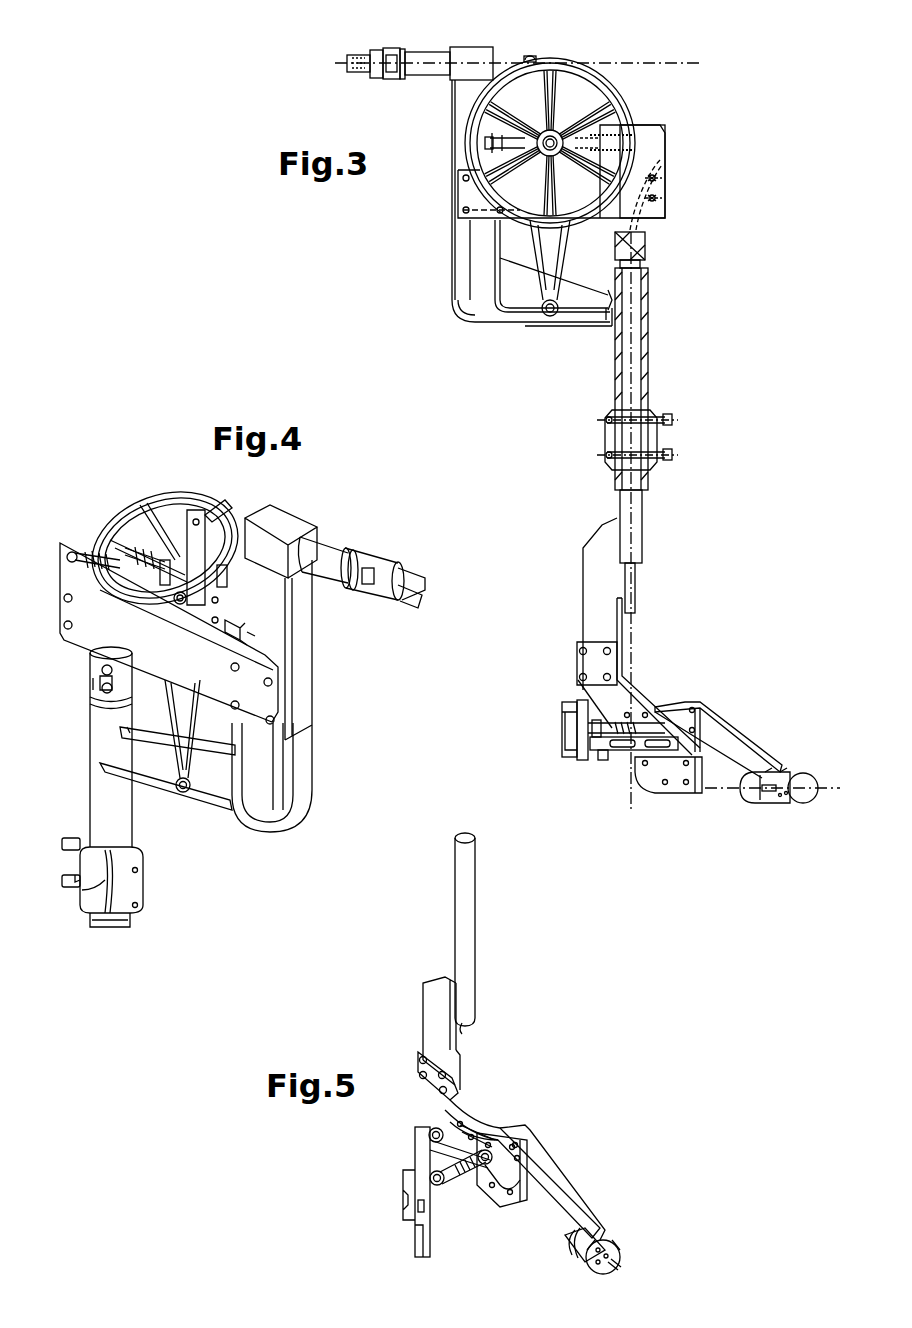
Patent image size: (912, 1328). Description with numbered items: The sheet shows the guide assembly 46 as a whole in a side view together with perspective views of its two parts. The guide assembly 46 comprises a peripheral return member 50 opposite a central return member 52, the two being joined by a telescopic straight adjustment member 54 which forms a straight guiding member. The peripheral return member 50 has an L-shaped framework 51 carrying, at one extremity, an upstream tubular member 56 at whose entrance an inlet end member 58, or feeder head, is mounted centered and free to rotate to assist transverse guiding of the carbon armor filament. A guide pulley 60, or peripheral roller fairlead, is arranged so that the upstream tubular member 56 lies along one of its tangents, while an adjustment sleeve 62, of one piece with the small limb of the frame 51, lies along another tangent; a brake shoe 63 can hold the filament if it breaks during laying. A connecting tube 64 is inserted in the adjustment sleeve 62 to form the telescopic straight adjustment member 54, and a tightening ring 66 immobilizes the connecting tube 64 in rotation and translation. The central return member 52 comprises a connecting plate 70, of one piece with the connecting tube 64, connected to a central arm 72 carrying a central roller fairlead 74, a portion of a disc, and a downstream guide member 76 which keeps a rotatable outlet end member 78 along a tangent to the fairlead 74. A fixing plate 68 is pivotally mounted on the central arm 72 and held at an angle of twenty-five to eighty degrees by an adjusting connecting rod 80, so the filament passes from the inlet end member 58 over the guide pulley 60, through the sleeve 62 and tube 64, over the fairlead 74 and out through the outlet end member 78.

In FIG. 3, the guide assembly 46 is at (757, 178).
In FIG. 3, the peripheral return member 50 is at (630, 48).
In FIG. 4, the peripheral return member 50 is at (62, 522).
In FIG. 3, the L-shaped framework 51 is at (475, 257).
In FIG. 4, the L-shaped framework 51 is at (222, 782).
In FIG. 3, the central return member 52 is at (730, 690).
In FIG. 3, the telescopic straight adjustment member 54 is at (703, 355).
In FIG. 3, the upstream tubular member 56 is at (430, 55).
In FIG. 4, the upstream tubular member 56 is at (328, 552).
In FIG. 3, the inlet end member 58 is at (350, 45).
In FIG. 4, the inlet end member 58 is at (402, 620).
In FIG. 3, the guide pulley 60 is at (582, 62).
In FIG. 4, the guide pulley 60 is at (147, 503).
In FIG. 3, the adjustment sleeve 62 is at (650, 322).
In FIG. 4, the adjustment sleeve 62 is at (100, 808).
In FIG. 3, the brake shoe 63 is at (655, 168).
In FIG. 3, the connecting tube 64 is at (640, 535).
In FIG. 5, the connecting tube 64 is at (460, 905).
In FIG. 3, the tightening ring 66 is at (688, 435).
In FIG. 3, the fixing plate 68 is at (566, 730).
In FIG. 5, the fixing plate 68 is at (405, 1182).
In FIG. 3, the connecting plate 70 is at (596, 565).
In FIG. 5, the connecting plate 70 is at (432, 1016).
In FIG. 3, the central arm 72 is at (666, 675).
In FIG. 5, the central arm 72 is at (493, 1100).
In FIG. 3, the central roller fairlead 74 is at (650, 770).
In FIG. 5, the central roller fairlead 74 is at (500, 1190).
In FIG. 3, the downstream guide member 76 is at (805, 752).
In FIG. 5, the downstream guide member 76 is at (598, 1172).
In FIG. 3, the outlet end member 78 is at (803, 800).
In FIG. 5, the outlet end member 78 is at (606, 1245).
In FIG. 3, the adjusting connecting rod 80 is at (612, 727).
In FIG. 5, the adjusting connecting rod 80 is at (468, 1175).